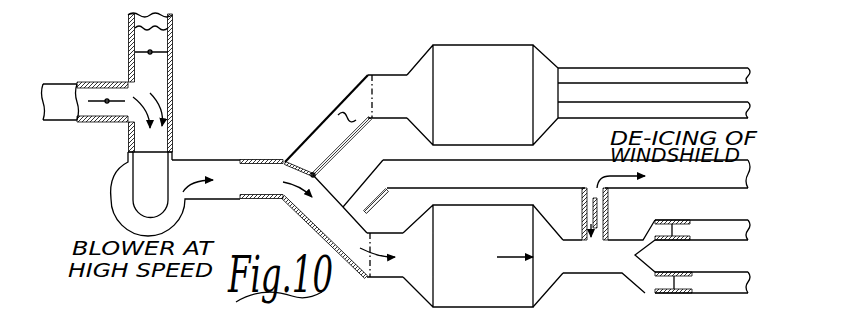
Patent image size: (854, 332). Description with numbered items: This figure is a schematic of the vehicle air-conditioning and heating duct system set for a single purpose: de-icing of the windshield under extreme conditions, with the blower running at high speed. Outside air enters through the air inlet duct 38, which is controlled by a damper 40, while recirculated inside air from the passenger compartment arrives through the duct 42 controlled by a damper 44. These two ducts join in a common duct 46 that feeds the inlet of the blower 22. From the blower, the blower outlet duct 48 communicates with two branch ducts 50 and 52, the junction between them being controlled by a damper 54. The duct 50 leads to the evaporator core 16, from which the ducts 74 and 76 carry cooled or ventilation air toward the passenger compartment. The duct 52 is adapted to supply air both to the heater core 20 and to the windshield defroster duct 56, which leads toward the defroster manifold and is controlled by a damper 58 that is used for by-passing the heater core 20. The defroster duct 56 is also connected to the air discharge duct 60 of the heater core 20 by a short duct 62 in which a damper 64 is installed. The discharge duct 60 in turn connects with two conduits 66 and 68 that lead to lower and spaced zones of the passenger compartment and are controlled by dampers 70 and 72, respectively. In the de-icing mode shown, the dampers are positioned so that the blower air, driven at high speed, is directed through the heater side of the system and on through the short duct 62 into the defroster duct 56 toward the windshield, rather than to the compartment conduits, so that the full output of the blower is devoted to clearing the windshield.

The evaporator core 16 is at (527, 75).
The heater core 20 is at (443, 268).
The blower 22 is at (125, 188).
The air inlet duct 38 is at (54, 97).
The damper 40 is at (93, 100).
The recirculation duct 42 is at (165, 22).
The damper 44 is at (157, 55).
The common duct 46 is at (160, 160).
The blower outlet duct 48 is at (224, 161).
The duct 50 is at (355, 100).
The duct 52 is at (357, 247).
The damper 54 is at (300, 165).
The windshield defroster duct 56 is at (410, 170).
The damper 58 is at (378, 198).
The air discharge duct 60 is at (592, 257).
The short duct 62 is at (593, 186).
The damper 64 is at (583, 210).
The conduit 66 is at (745, 228).
The conduit 68 is at (740, 283).
The damper 70 is at (673, 236).
The damper 72 is at (680, 292).
The duct 74 is at (742, 73).
The duct 76 is at (742, 107).